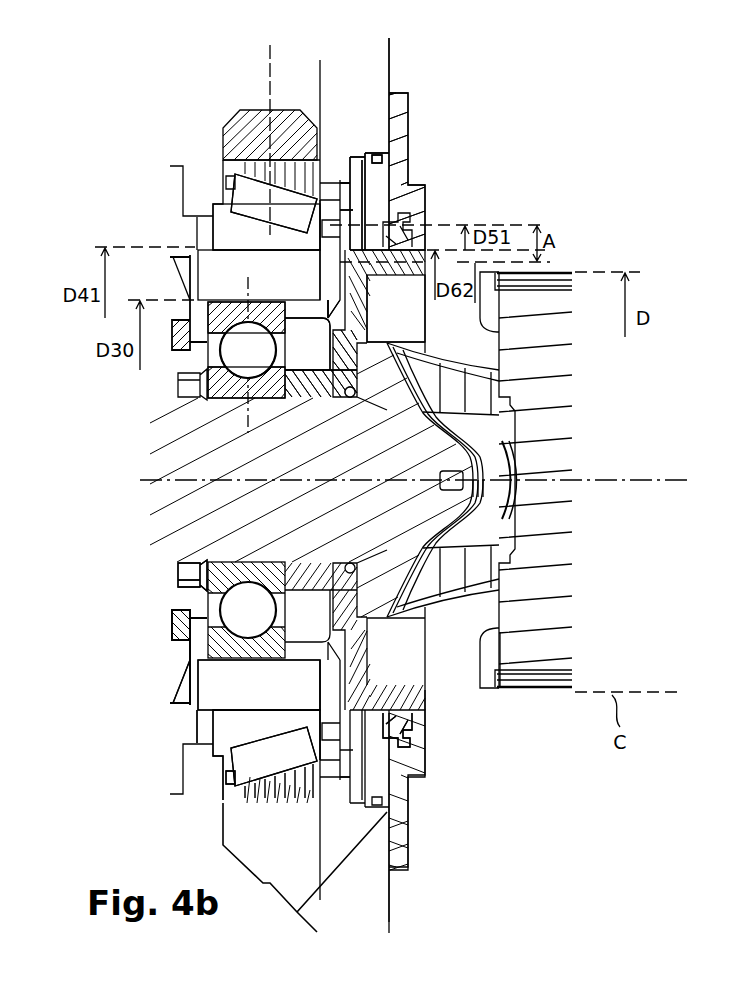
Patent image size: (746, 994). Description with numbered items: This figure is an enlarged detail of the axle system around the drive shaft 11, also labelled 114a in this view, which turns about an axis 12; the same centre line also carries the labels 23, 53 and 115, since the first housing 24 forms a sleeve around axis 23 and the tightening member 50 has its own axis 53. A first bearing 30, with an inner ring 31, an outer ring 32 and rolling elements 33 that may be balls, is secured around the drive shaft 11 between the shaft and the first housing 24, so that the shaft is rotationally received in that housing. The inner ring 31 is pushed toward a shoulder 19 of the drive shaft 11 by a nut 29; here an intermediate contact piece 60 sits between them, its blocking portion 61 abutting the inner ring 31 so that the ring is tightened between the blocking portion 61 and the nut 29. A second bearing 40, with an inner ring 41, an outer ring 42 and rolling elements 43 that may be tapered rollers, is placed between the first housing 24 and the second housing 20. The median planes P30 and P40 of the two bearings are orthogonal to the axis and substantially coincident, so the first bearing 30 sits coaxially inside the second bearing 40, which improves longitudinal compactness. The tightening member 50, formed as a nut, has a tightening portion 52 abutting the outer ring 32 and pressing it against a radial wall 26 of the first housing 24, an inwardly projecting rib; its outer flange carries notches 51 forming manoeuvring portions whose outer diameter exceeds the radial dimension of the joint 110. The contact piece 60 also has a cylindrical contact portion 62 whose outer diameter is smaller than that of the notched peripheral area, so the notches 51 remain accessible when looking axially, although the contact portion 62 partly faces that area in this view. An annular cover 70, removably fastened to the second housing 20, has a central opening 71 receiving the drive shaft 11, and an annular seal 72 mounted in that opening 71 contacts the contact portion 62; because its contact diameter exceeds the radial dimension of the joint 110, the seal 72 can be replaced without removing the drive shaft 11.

The drive shaft 11 is at (311, 486).
The shaft portion 114a is at (311, 486).
The axis 12 is at (621, 488).
The axis 23 is at (621, 488).
The axis 53 is at (621, 488).
The hub connection 115 is at (612, 480).
The shoulder 19 is at (388, 623).
The second housing 20 is at (286, 856).
The first housing 24 is at (222, 690).
The radial wall 26 is at (197, 637).
The nut 29 is at (182, 572).
The first bearing 30 is at (165, 389).
The inner ring 31 is at (230, 397).
The outer ring 32 is at (230, 312).
The rolling elements 33 is at (237, 352).
The second bearing 40 is at (189, 169).
The inner ring 41 is at (227, 229).
The outer ring 42 is at (233, 126).
The rolling elements 43 is at (250, 202).
The tightening member 50 is at (275, 600).
The notch 51 is at (367, 188).
The tightening portion 52 is at (290, 375).
The contact piece 60 is at (435, 708).
The blocking portion 61 is at (316, 383).
The contact portion 62 is at (390, 262).
The annular cover 70 is at (398, 813).
The central opening 71 is at (428, 672).
The annular seal 72 is at (413, 740).
The joint 110 is at (535, 710).
The median plane P40 is at (270, 72).
The median plane P30 is at (252, 283).